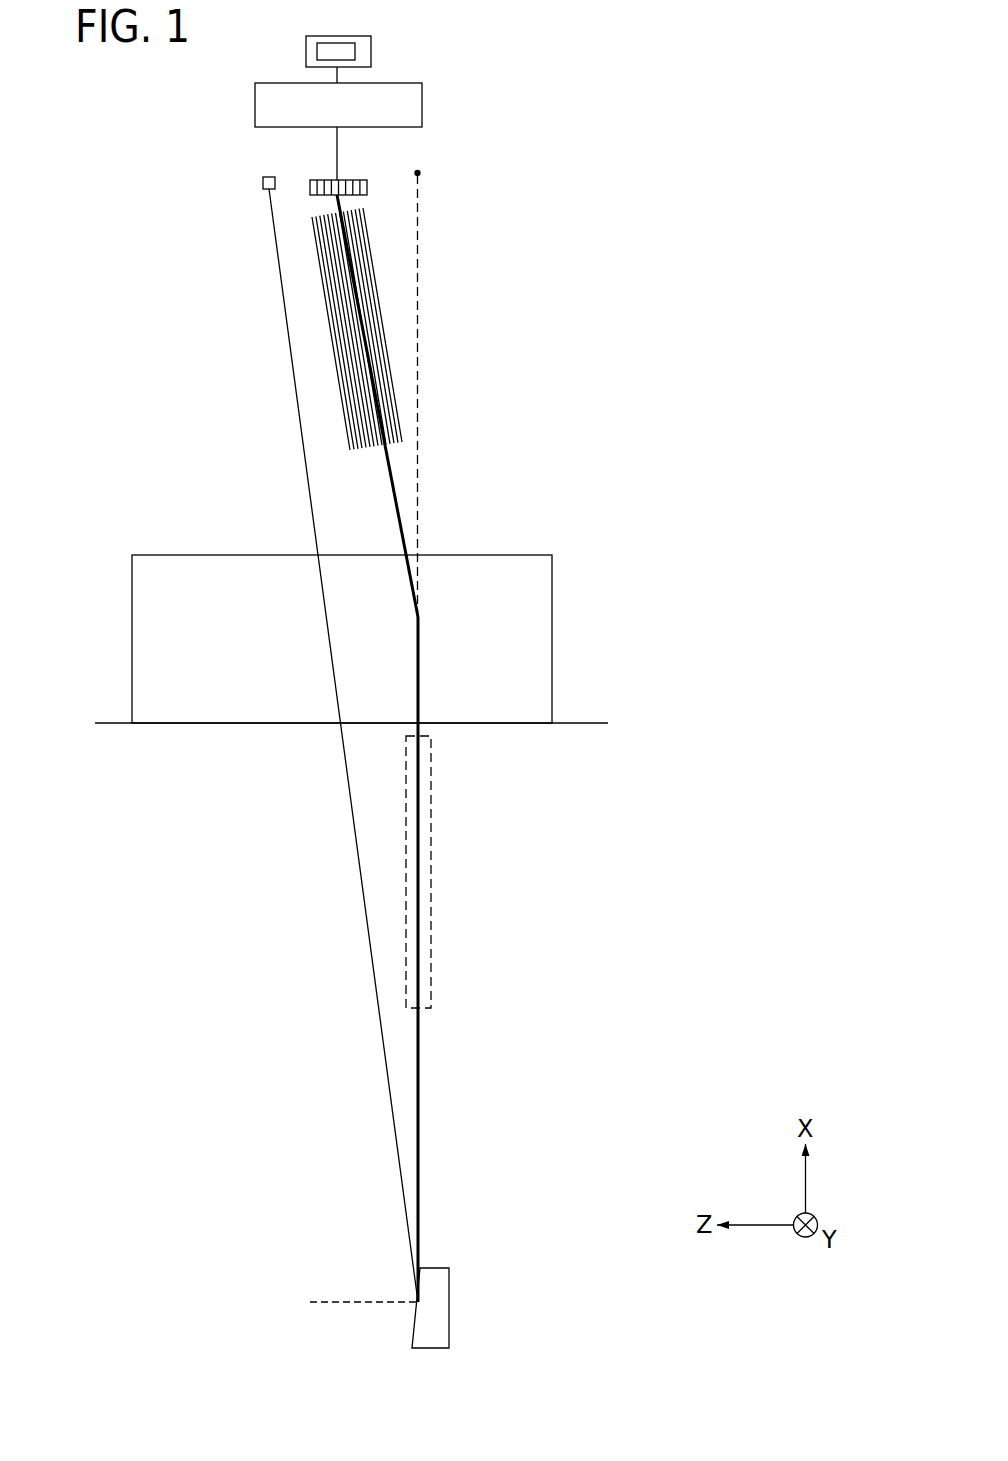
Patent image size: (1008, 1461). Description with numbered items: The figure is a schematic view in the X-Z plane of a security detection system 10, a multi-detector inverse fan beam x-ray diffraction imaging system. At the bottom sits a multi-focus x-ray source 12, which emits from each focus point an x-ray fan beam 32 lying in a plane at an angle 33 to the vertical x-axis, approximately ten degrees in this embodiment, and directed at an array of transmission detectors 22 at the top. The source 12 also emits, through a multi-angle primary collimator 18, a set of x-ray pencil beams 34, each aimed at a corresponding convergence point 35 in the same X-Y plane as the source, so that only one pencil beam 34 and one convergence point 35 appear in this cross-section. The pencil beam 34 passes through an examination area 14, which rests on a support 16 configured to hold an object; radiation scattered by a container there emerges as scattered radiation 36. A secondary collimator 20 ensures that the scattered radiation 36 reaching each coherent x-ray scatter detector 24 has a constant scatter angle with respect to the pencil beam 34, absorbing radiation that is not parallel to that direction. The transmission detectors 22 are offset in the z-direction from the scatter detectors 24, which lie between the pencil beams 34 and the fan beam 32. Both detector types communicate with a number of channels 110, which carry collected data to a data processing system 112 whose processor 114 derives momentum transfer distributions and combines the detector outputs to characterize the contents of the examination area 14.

The security detection system 10 is at (672, 105).
The multi-focus x-ray source 12 is at (450, 1283).
The examination area 14 is at (510, 555).
The support 16 is at (470, 723).
The multi-angle primary collimator 18 is at (431, 866).
The secondary collimator 20 is at (341, 343).
The transmission detectors 22 is at (264, 189).
The coherent x-ray scatter detectors 24 is at (311, 180).
The x-ray fan beam 32 is at (375, 990).
The angle 33 is at (422, 1125).
The x-ray pencil beam 34 is at (417, 1095).
The convergence point 35 is at (418, 172).
The scattered radiation 36 is at (397, 509).
The channels 110 is at (423, 102).
The data processing system 112 is at (372, 52).
The processor 114 is at (320, 48).